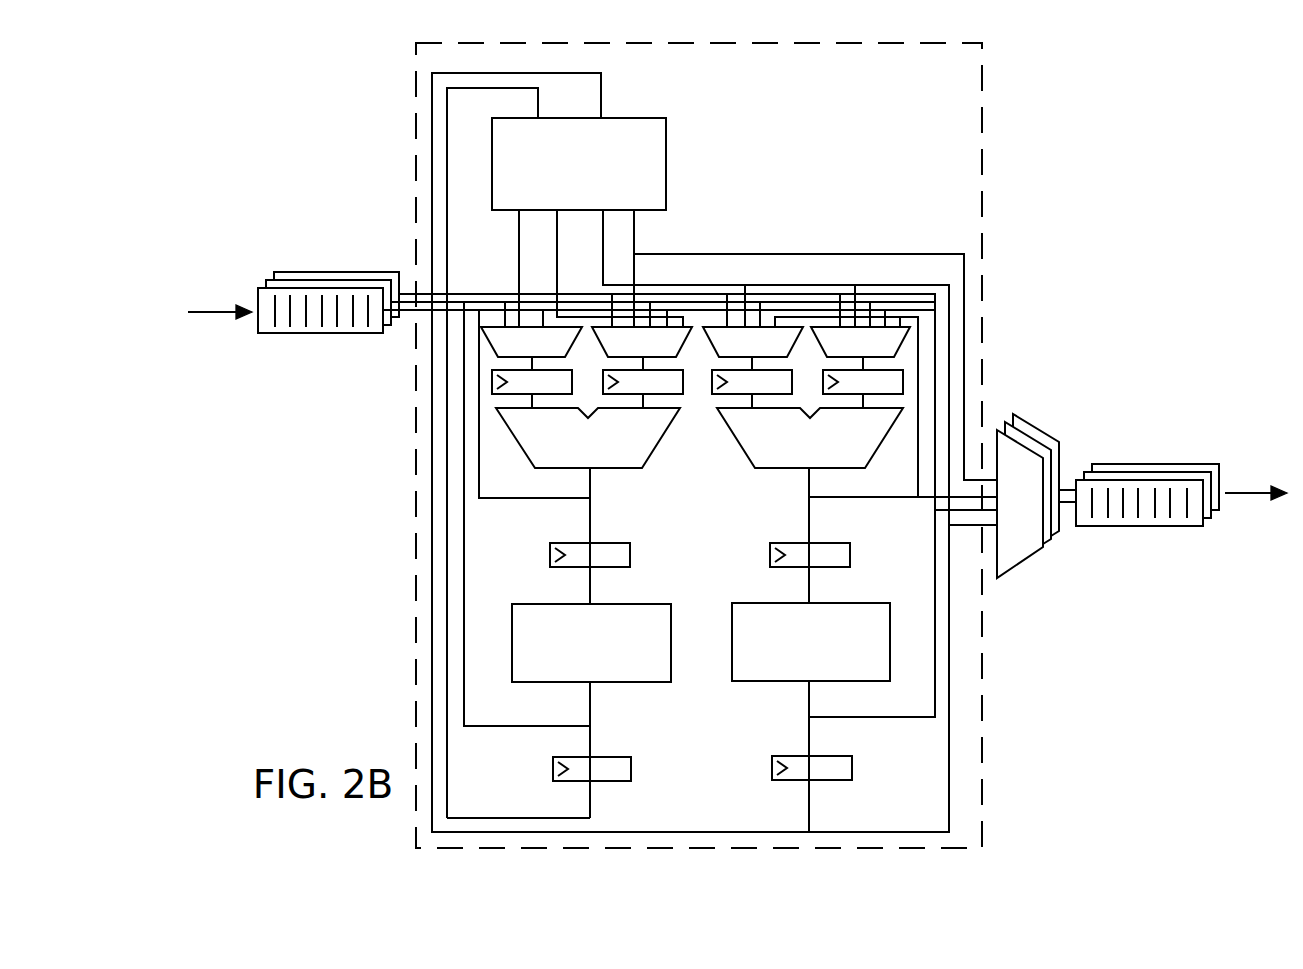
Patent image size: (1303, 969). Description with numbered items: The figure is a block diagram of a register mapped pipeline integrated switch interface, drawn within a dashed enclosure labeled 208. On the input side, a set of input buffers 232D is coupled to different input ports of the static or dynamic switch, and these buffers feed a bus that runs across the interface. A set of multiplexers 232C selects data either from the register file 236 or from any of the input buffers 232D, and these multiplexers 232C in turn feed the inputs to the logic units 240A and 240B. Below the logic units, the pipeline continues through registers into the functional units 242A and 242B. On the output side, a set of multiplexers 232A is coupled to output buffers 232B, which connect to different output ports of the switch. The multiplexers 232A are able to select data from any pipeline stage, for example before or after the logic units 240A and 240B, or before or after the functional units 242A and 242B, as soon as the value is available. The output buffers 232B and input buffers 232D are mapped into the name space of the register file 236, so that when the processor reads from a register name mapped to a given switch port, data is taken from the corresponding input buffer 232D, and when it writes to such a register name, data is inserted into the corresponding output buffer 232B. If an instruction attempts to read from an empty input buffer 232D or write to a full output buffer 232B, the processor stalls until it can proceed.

The processing block 208 is at (893, 98).
The register file 236 is at (559, 181).
The multiplexers 232C is at (505, 355).
The logic unit 240A is at (563, 448).
The logic unit 240B is at (783, 448).
The functional unit 242A is at (563, 653).
The functional unit 242B is at (784, 653).
The multiplexers 232A is at (1022, 565).
The output buffers 232B is at (1155, 526).
The input buffers 232D is at (322, 333).